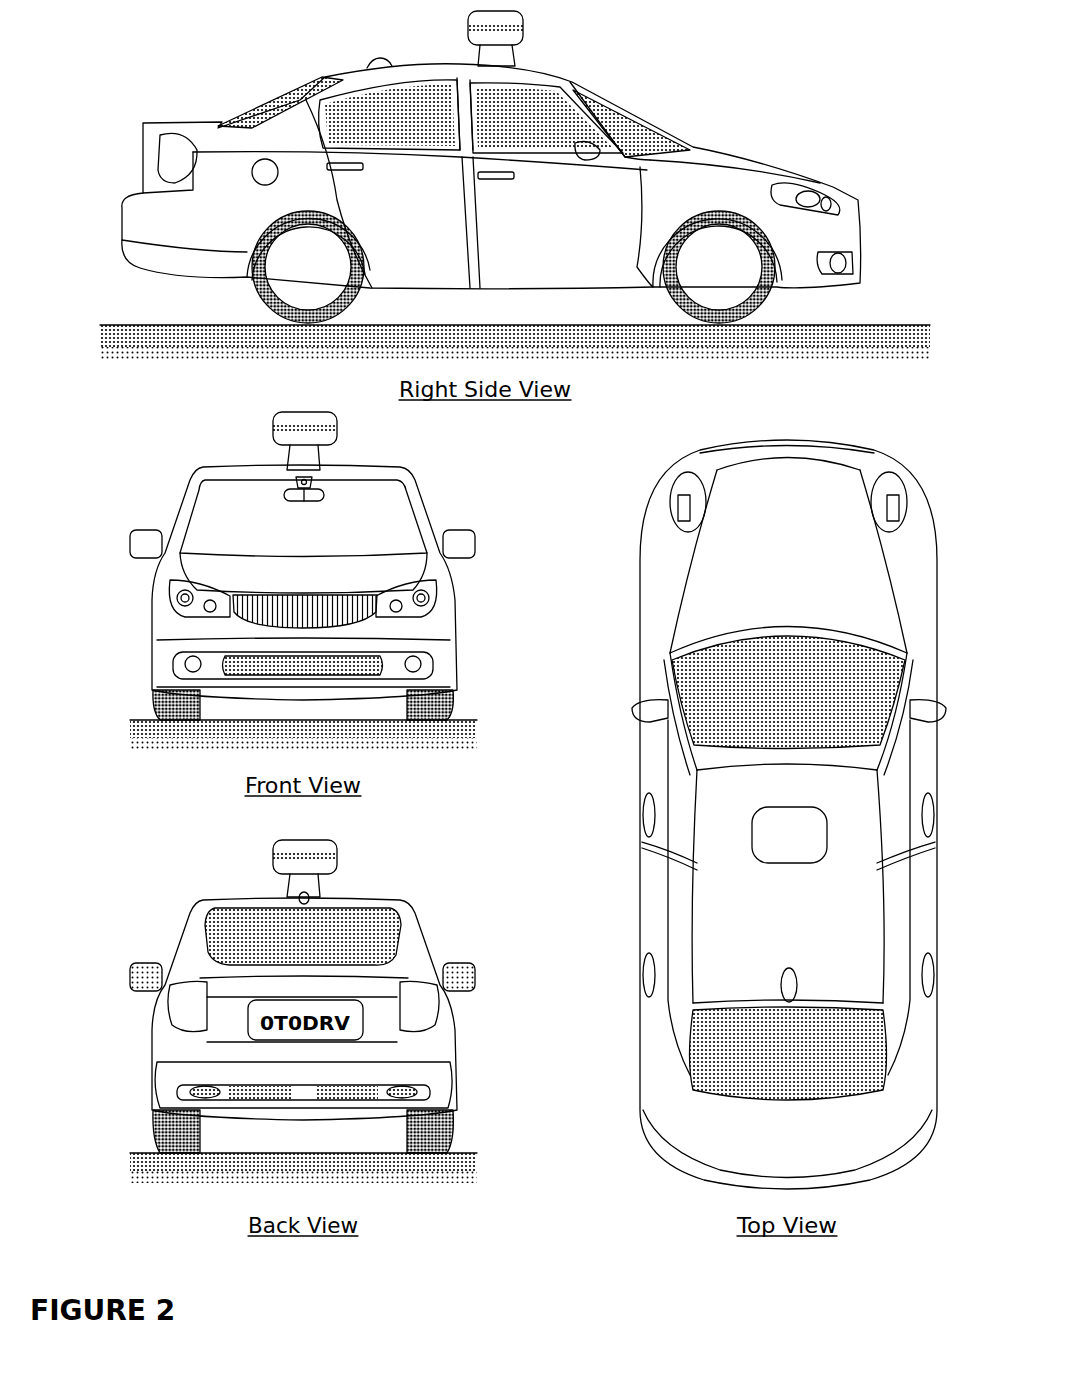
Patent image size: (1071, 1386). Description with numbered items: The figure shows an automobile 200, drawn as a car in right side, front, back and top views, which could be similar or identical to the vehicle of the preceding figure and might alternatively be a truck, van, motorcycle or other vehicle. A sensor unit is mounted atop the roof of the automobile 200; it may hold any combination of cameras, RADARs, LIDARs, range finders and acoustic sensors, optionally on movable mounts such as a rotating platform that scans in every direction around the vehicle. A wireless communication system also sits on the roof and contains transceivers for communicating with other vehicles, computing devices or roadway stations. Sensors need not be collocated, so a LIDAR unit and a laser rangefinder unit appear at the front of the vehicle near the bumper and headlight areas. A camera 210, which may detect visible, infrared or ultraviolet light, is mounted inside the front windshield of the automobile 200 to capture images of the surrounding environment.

The automobile 200 is at (118, 123).
The camera 210 is at (312, 482).